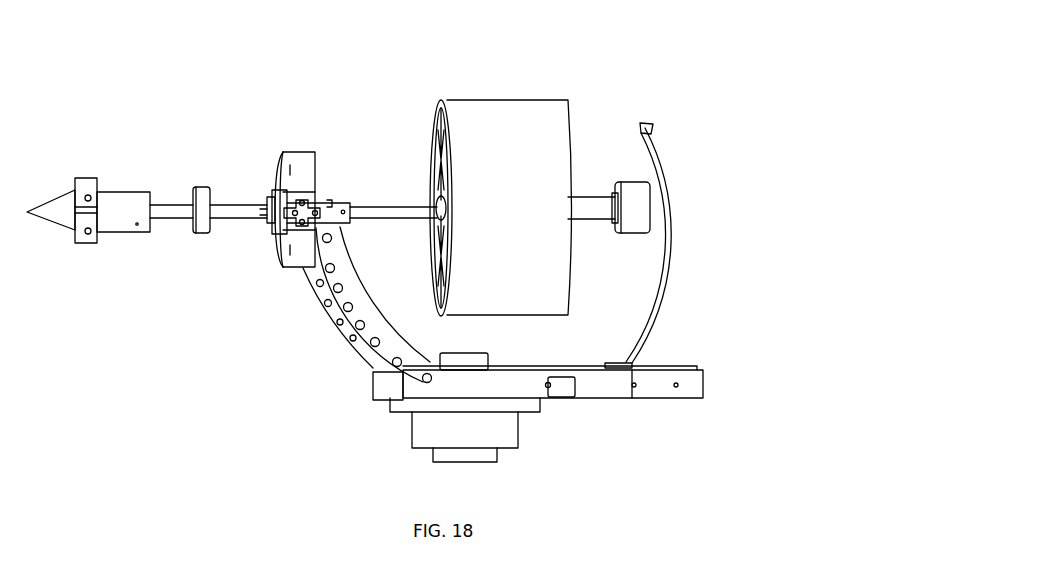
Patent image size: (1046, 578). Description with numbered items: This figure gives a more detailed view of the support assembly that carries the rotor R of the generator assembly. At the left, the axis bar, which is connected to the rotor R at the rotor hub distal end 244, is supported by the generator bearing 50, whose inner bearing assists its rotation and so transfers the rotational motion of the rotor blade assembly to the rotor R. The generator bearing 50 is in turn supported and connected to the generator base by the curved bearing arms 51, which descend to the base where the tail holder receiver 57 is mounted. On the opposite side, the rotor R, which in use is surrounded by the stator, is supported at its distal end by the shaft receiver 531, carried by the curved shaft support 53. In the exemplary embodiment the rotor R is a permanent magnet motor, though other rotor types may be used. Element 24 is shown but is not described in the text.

The tailstock 24 is at (120, 193).
The generator bearing 50 is at (293, 151).
The rotor hub distal end 244 is at (355, 205).
The bearing arms 51 is at (318, 295).
The rotor R is at (518, 107).
The shaft receiver 531 is at (588, 207).
The shaft support 53 is at (649, 124).
The tail holder receiver 57 is at (667, 366).